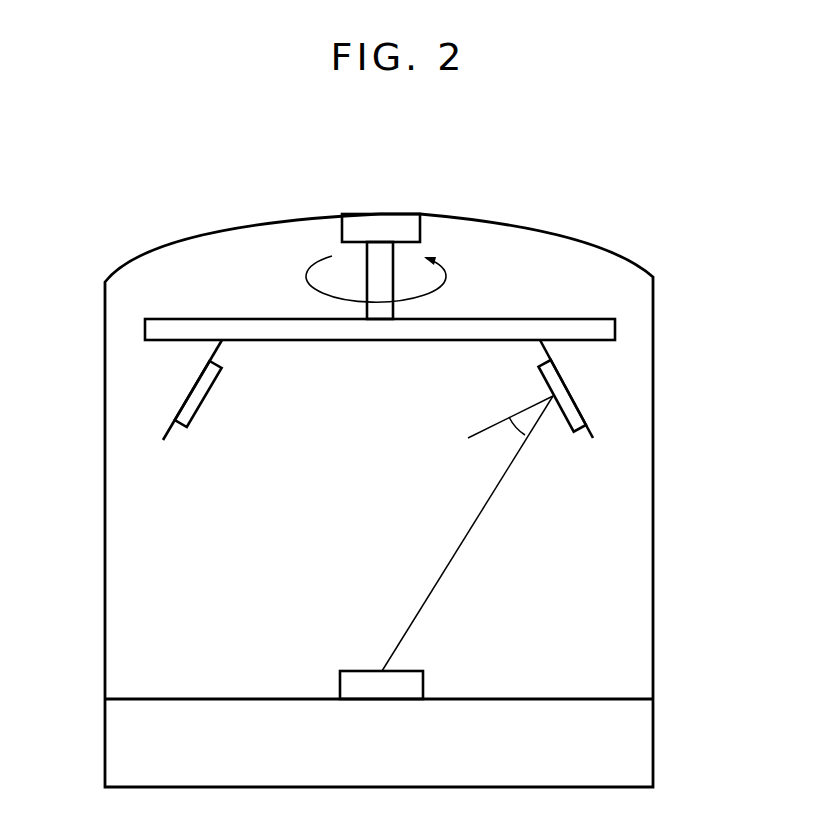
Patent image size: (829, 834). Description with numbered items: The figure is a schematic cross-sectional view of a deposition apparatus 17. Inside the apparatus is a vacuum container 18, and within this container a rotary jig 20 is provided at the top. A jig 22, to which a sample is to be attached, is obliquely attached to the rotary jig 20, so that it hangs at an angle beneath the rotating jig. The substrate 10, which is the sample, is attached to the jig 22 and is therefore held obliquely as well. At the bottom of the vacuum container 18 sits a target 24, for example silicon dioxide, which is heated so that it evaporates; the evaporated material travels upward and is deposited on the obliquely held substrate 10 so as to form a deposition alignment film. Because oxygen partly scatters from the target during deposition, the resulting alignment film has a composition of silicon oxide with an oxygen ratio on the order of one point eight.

The deposition apparatus 17 is at (655, 230).
The vacuum container 18 is at (653, 508).
The rotary jig 20 is at (487, 322).
The jig 22 is at (205, 358).
The substrate 10 is at (200, 395).
The target 24 is at (352, 675).